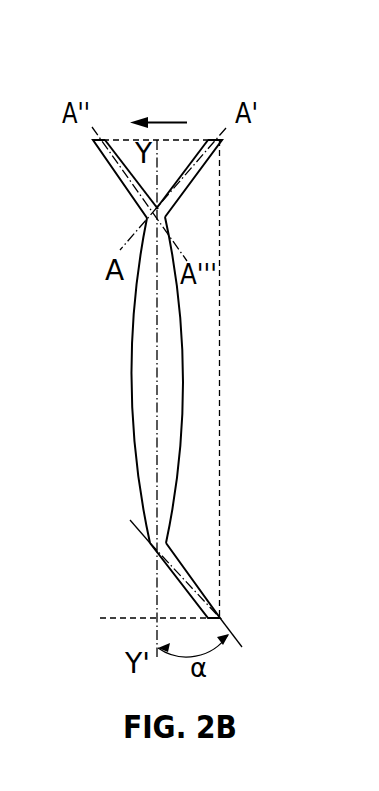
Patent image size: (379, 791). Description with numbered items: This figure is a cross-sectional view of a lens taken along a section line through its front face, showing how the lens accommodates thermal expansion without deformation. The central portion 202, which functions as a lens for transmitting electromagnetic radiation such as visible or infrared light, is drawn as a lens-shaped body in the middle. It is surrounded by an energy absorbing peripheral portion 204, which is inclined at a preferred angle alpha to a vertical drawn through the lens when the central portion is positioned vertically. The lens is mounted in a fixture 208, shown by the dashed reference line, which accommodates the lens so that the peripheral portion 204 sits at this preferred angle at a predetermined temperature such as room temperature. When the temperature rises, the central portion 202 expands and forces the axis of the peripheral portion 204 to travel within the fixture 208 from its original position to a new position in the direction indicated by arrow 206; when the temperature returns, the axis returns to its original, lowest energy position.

The central portion 202 is at (140, 375).
The peripheral portion 204 is at (202, 588).
The arrow 206 is at (160, 122).
The fixture 208 is at (220, 347).